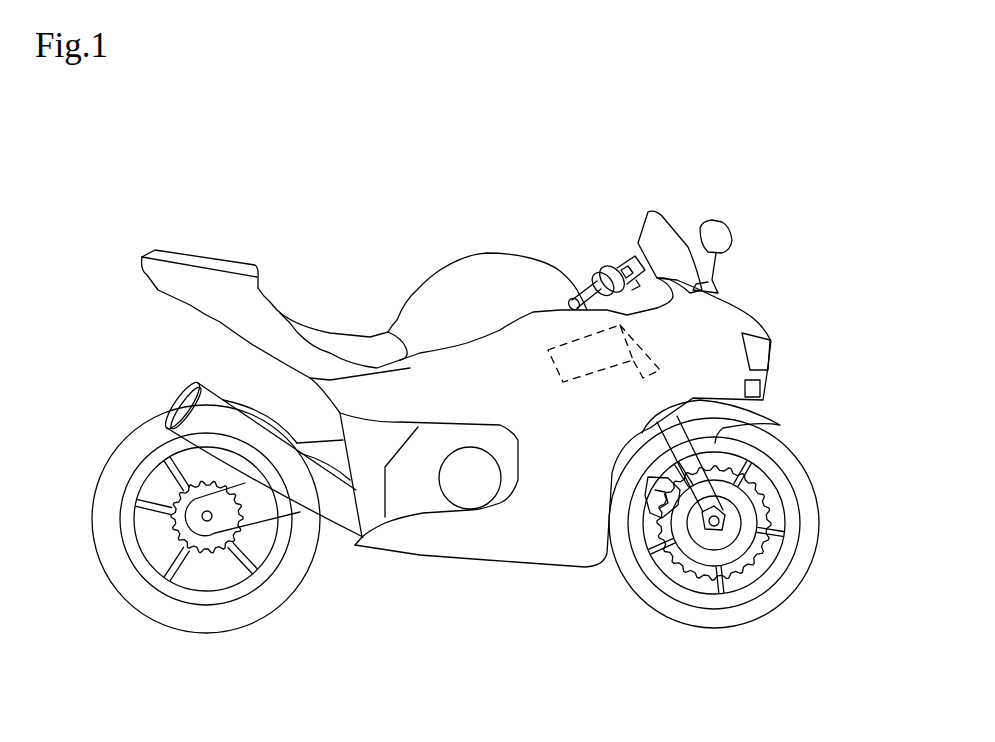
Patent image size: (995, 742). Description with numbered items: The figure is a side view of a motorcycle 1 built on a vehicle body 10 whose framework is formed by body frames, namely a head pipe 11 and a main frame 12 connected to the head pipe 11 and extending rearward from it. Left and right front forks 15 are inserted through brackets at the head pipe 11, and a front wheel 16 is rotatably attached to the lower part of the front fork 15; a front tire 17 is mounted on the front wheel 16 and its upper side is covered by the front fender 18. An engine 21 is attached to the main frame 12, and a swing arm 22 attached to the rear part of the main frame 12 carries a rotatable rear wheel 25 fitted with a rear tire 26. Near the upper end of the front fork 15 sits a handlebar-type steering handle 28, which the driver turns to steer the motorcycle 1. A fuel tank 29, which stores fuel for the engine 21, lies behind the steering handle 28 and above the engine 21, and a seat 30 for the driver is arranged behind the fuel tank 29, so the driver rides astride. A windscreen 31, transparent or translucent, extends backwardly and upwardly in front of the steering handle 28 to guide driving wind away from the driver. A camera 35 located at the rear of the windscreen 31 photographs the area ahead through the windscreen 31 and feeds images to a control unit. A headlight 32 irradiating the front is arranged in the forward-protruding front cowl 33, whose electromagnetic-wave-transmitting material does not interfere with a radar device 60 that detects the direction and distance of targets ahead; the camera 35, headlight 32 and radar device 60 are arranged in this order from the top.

The motorcycle 1 is at (85, 179).
The vehicle body 10 is at (478, 592).
The head pipe 11 is at (637, 377).
The main frame 12 is at (563, 382).
The front fork 15 is at (703, 507).
The front wheel 16 is at (772, 573).
The front tire 17 is at (733, 623).
The front fender 18 is at (762, 418).
The engine 21 is at (418, 510).
The swing arm 22 is at (262, 515).
The rear wheel 25 is at (235, 592).
The rear tire 26 is at (167, 617).
The steering handle 28 is at (572, 290).
The fuel tank 29 is at (462, 277).
The seat 30 is at (352, 340).
The windscreen 31 is at (637, 240).
The headlight 32 is at (770, 340).
The front cowl 33 is at (723, 328).
The camera 35 is at (695, 290).
The radar device 60 is at (762, 390).